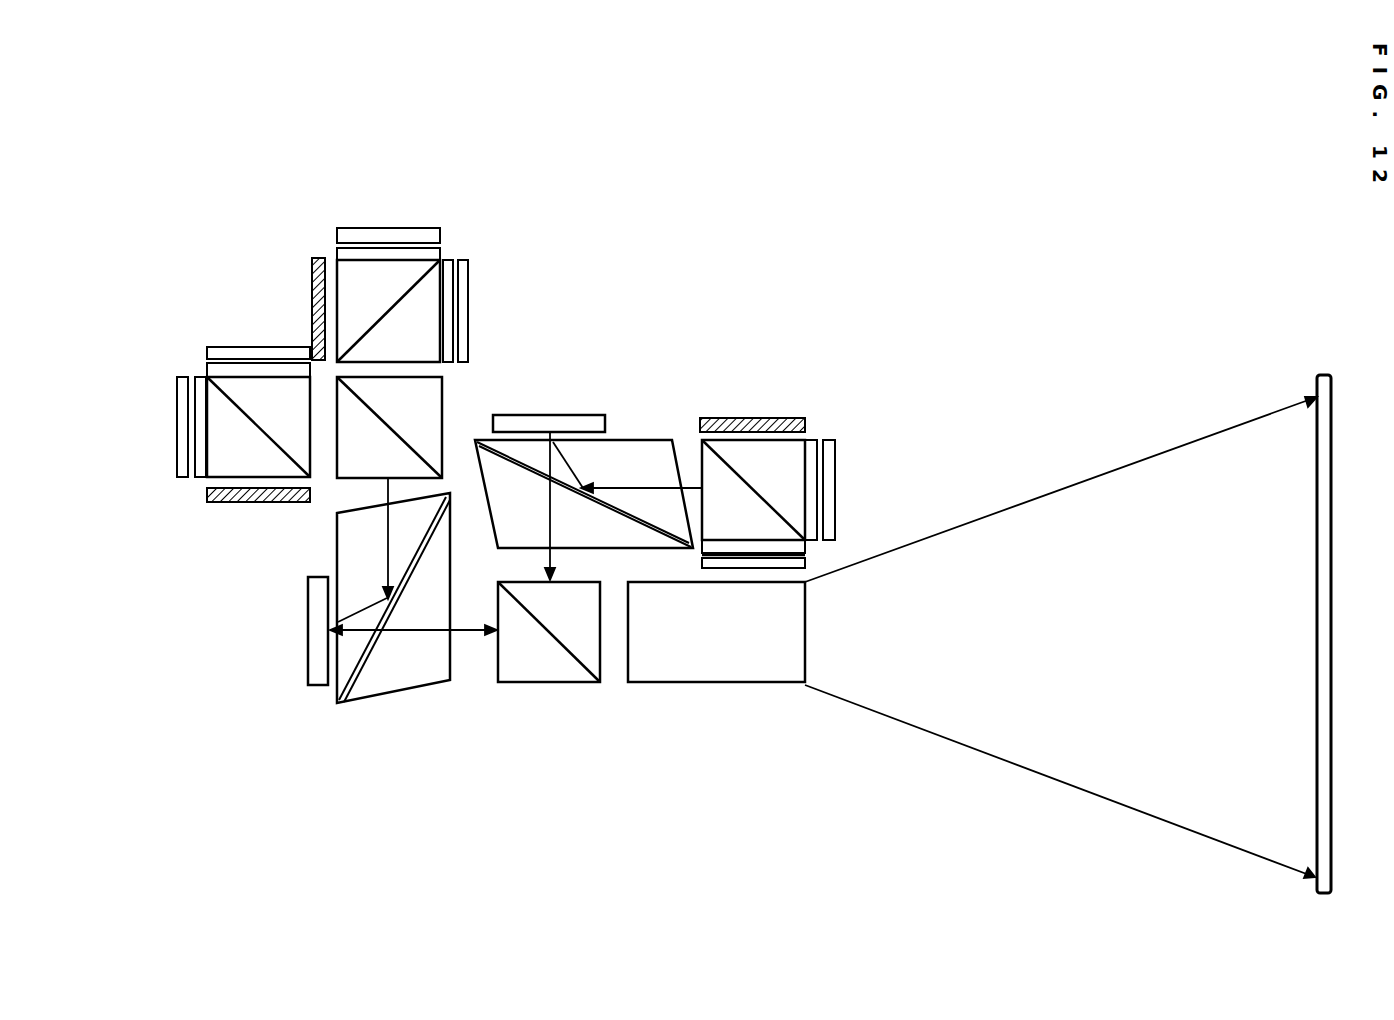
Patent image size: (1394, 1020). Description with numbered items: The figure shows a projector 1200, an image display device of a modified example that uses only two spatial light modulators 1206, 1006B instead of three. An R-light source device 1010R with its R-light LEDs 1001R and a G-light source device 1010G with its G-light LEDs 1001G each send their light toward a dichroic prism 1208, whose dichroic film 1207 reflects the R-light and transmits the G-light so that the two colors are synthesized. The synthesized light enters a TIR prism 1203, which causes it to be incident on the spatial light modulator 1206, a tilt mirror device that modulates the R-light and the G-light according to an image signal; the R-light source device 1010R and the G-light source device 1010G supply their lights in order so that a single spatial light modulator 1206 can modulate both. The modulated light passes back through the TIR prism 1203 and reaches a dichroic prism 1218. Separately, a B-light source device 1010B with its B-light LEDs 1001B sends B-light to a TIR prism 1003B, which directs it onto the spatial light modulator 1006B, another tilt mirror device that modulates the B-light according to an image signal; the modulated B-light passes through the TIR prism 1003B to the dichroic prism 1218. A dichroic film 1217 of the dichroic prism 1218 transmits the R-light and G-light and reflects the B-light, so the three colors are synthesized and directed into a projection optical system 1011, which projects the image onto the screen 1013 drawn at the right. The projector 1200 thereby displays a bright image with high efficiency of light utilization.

The projector 1200 is at (810, 309).
The R-light source device 1010R is at (166, 342).
The R-light LED 1001R is at (207, 351).
The G-light source device 1010G is at (462, 219).
The G-light LED 1001G is at (440, 238).
The B-light source device 1010B is at (825, 419).
The B-light LED 1001B is at (805, 560).
The dichroic film 1207 is at (372, 403).
The dichroic prism 1208 is at (432, 422).
The spatial light modulator 1206 is at (308, 597).
The TIR prism 1203 is at (403, 687).
The spatial light modulator 1006B is at (552, 415).
The TIR prism 1003B is at (648, 450).
The dichroic prism 1218 is at (535, 672).
The dichroic film 1217 is at (602, 667).
The projection optical system 1011 is at (770, 675).
The screen 1013 is at (1325, 375).